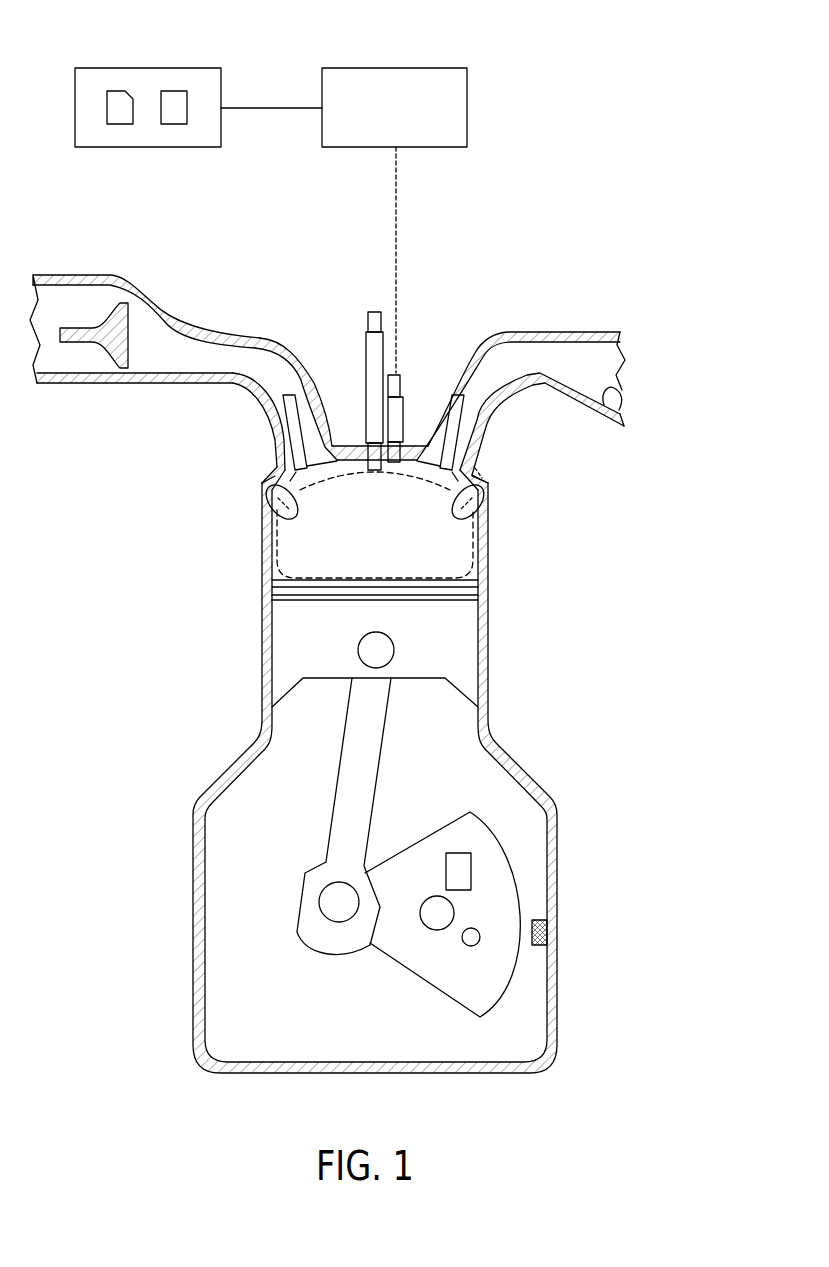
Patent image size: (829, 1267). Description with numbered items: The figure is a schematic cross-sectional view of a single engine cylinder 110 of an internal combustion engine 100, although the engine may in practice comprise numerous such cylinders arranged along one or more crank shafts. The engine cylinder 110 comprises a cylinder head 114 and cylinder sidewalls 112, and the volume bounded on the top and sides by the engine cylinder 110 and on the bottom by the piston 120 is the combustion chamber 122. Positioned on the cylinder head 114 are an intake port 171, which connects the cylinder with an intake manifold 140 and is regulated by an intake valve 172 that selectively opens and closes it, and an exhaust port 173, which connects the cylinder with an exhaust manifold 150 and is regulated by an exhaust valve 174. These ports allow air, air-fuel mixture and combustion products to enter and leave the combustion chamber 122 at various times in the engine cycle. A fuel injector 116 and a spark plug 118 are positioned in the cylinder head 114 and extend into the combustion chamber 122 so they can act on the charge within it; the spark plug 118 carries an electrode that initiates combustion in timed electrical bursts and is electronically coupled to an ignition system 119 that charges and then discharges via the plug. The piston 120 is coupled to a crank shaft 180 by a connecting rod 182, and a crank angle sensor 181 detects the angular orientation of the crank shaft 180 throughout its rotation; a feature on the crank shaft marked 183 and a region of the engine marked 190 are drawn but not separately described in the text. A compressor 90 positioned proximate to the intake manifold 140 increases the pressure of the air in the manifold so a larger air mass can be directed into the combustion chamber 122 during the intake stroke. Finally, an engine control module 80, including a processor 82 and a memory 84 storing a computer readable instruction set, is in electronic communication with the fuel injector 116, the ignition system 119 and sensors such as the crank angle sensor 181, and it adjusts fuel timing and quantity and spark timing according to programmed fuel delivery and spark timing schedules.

The engine control module 80 is at (160, 68).
The processor 82 is at (120, 124).
The memory 84 is at (175, 124).
The compressor 90 is at (88, 350).
The internal combustion engine 100 is at (668, 132).
The engine cylinder 110 is at (482, 498).
The cylinder sidewalls 112 is at (267, 563).
The cylinder head 114 is at (473, 483).
The fuel injector 116 is at (372, 312).
The spark plug 118 is at (397, 375).
The ignition system 119 is at (398, 68).
The piston 120 is at (323, 678).
The combustion chamber 122 is at (277, 497).
The intake manifold 140 is at (152, 303).
The exhaust manifold 150 is at (612, 400).
The intake port 171 is at (266, 350).
The intake valve 172 is at (283, 512).
The exhaust port 173 is at (577, 347).
The exhaust valve 174 is at (461, 393).
The crank shaft 180 is at (438, 827).
The crank angle sensor 181 is at (538, 918).
The connecting rod 182 is at (335, 813).
The crankshaft position marker 183 is at (460, 852).
The engine 190 is at (427, 292).